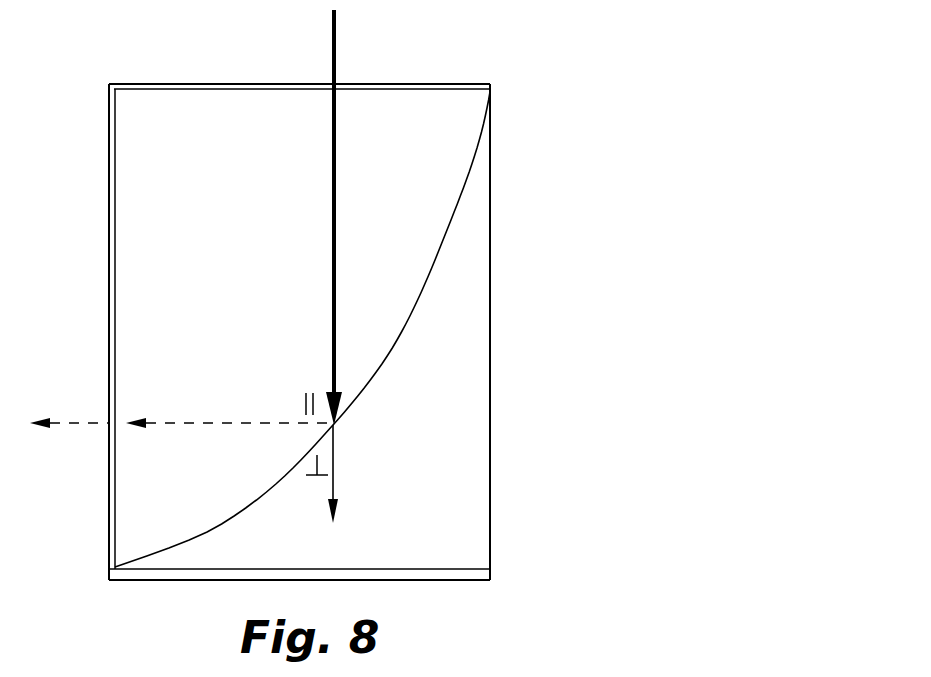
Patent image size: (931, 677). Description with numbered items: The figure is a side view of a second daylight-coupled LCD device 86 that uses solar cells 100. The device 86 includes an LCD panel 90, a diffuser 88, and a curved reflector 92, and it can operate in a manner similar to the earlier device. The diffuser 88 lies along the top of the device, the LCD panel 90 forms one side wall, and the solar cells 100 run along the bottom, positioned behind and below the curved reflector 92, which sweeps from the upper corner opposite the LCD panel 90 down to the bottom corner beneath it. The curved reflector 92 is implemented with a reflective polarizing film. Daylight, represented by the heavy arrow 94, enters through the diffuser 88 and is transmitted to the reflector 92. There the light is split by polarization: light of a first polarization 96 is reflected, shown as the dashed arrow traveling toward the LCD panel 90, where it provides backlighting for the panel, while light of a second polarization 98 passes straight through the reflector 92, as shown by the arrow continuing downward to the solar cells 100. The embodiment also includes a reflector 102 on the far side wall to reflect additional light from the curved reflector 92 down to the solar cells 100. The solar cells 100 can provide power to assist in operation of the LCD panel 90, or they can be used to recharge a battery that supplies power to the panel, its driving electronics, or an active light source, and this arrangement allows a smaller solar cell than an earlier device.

The daylight-coupled LCD device 86 is at (524, 54).
The diffuser 88 is at (422, 83).
The LCD panel 90 is at (108, 265).
The curved reflector 92 is at (396, 339).
The daylight 94 is at (338, 33).
The light of a first polarization 96 is at (207, 420).
The light of a second polarization 98 is at (336, 453).
The solar cells 100 is at (177, 580).
The reflector 102 is at (492, 323).